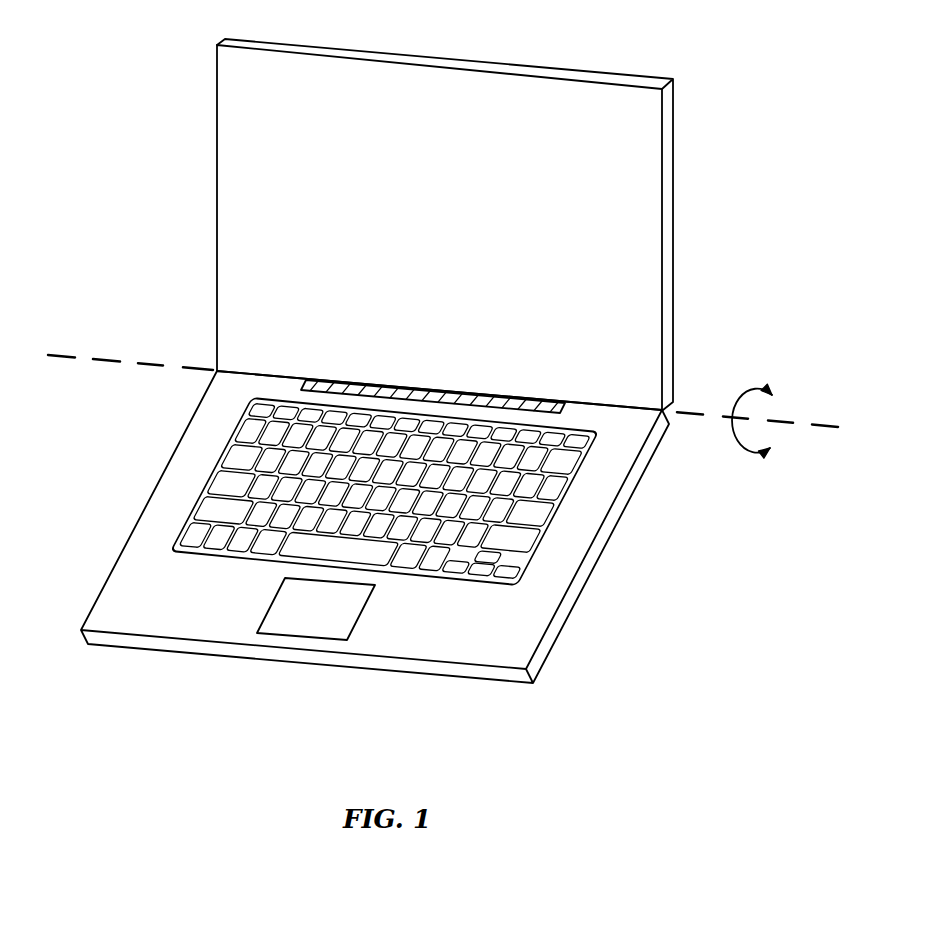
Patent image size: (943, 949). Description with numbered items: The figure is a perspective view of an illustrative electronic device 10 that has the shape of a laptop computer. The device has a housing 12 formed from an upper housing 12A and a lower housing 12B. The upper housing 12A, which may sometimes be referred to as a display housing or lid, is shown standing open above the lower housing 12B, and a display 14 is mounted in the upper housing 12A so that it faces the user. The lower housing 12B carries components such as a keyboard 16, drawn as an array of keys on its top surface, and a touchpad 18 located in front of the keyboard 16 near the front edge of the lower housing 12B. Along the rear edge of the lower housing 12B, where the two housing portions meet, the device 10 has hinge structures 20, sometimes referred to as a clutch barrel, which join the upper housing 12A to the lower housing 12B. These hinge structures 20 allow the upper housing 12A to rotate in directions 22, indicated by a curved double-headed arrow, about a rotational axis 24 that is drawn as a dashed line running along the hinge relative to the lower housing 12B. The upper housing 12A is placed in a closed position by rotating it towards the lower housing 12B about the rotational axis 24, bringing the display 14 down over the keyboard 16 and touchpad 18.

The electronic device 10 is at (728, 50).
The housing 12 is at (675, 345).
The upper housing 12A is at (203, 48).
The lower housing 12B is at (203, 377).
The display 14 is at (583, 218).
The keyboard 16 is at (527, 507).
The touchpad 18 is at (359, 617).
The hinge structures 20 is at (545, 395).
The directions 22 is at (748, 452).
The rotational axis 24 is at (104, 357).